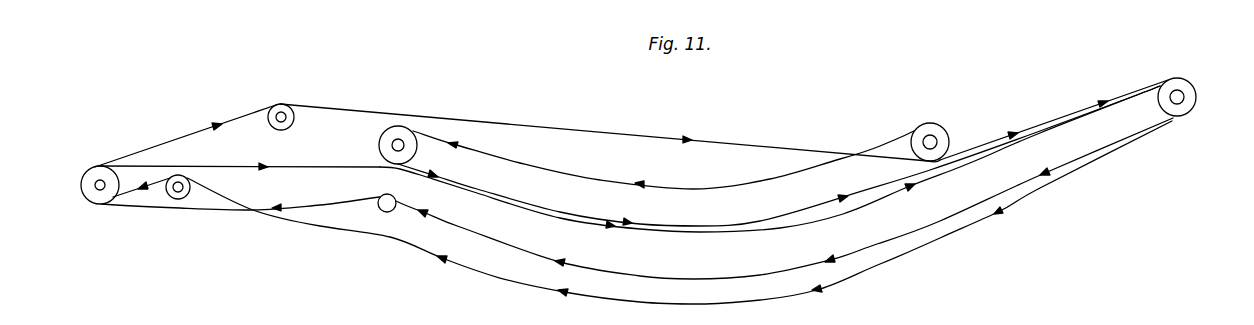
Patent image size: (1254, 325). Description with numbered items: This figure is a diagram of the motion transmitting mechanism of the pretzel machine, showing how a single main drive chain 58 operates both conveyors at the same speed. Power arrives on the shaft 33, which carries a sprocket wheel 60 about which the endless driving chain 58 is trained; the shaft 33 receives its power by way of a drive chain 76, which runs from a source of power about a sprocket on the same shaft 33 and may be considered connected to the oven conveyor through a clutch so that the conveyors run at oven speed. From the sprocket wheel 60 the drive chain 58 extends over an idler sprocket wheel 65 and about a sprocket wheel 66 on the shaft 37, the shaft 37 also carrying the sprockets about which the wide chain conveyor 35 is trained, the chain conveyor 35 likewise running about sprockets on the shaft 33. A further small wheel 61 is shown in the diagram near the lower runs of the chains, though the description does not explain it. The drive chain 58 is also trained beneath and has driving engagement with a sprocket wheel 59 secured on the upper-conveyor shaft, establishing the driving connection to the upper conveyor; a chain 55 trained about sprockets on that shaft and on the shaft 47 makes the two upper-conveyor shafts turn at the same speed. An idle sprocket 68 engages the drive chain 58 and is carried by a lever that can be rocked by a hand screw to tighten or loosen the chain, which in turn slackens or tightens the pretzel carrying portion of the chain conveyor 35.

The sprocket wheel 66 is at (98, 196).
The shaft 37 is at (107, 167).
The idler sprocket wheel 65 is at (170, 195).
The idle sprocket 68 is at (293, 120).
The shaft 47 is at (401, 140).
The roller 61 is at (386, 204).
The chain 55 is at (565, 172).
The endless drive chain 58 is at (793, 148).
The sprocket wheel 59 is at (942, 128).
The drive chain 76 is at (929, 138).
The sprocket wheel 60 is at (1197, 62).
The shaft 33 is at (1176, 101).
The chain conveyor 35 is at (935, 223).